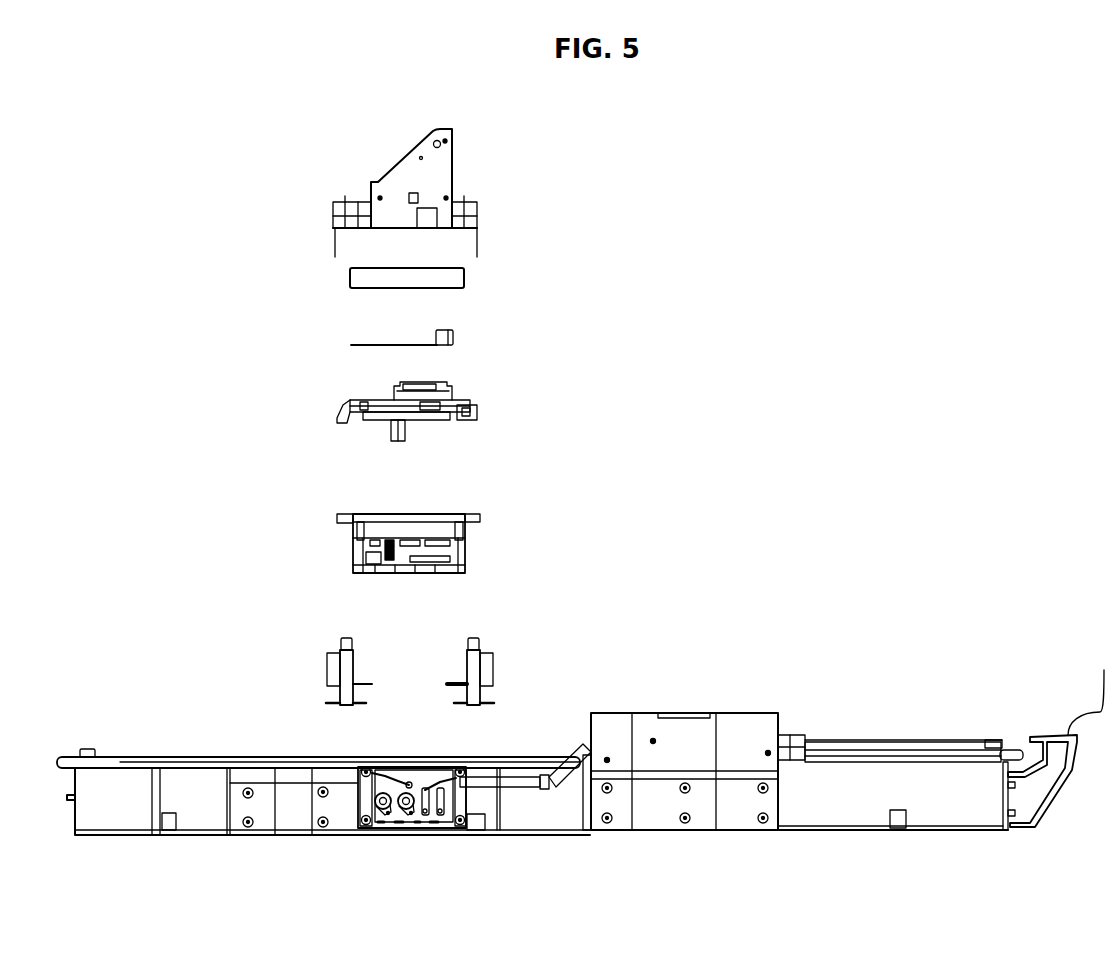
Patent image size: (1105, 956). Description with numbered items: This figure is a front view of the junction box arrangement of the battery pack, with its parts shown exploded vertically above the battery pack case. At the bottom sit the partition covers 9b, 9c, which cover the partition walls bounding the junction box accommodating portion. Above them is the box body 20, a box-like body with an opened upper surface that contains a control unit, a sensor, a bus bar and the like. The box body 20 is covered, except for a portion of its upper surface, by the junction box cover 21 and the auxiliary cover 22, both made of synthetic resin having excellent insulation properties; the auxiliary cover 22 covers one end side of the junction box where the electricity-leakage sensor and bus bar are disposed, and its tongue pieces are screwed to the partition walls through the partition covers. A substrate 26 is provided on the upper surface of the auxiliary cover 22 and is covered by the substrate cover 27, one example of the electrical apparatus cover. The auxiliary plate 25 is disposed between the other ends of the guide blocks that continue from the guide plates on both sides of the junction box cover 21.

The auxiliary plate 25 is at (452, 165).
The substrate cover 27 is at (462, 275).
The substrate 26 is at (453, 345).
The junction box cover 21 is at (462, 411).
The auxiliary cover 22 is at (477, 408).
The box body 20 is at (465, 535).
The partition cover 9b is at (335, 675).
The partition cover 9c is at (488, 670).